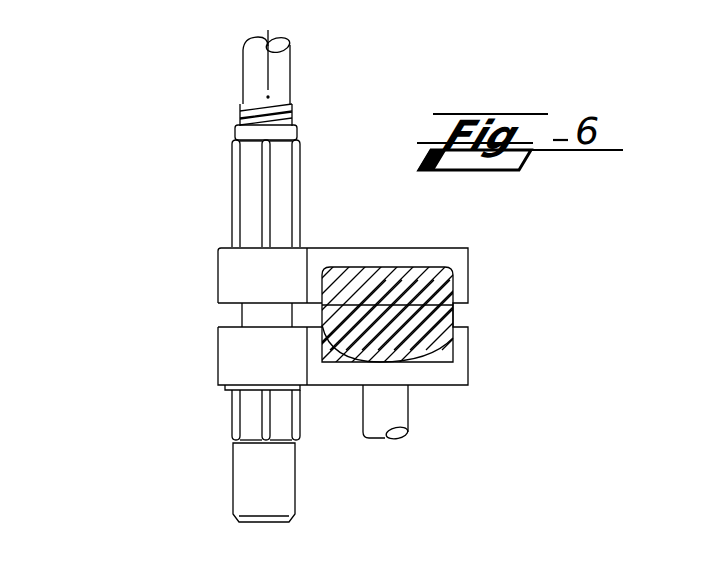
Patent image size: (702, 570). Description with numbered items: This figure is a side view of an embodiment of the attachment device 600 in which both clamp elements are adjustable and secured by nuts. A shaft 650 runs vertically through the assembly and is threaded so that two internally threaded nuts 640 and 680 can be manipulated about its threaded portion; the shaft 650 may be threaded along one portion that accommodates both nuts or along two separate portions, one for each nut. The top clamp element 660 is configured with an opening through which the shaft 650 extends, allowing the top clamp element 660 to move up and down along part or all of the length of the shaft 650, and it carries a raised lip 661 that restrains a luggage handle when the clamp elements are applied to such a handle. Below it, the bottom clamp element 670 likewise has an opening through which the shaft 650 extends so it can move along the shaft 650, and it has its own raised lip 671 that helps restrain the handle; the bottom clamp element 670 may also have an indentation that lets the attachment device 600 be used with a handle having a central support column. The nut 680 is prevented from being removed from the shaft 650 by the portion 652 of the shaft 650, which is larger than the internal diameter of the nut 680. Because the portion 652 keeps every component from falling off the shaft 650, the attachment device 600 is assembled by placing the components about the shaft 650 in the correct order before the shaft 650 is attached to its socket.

The attachment device 600 is at (56, 152).
The shaft 650 is at (242, 84).
The nut 640 is at (232, 206).
The top clamp element 660 is at (405, 248).
The raised lip 661 is at (468, 275).
The raised lip 671 is at (468, 358).
The bottom clamp element 670 is at (433, 385).
The nut 680 is at (232, 418).
The portion of shaft 652 is at (233, 478).